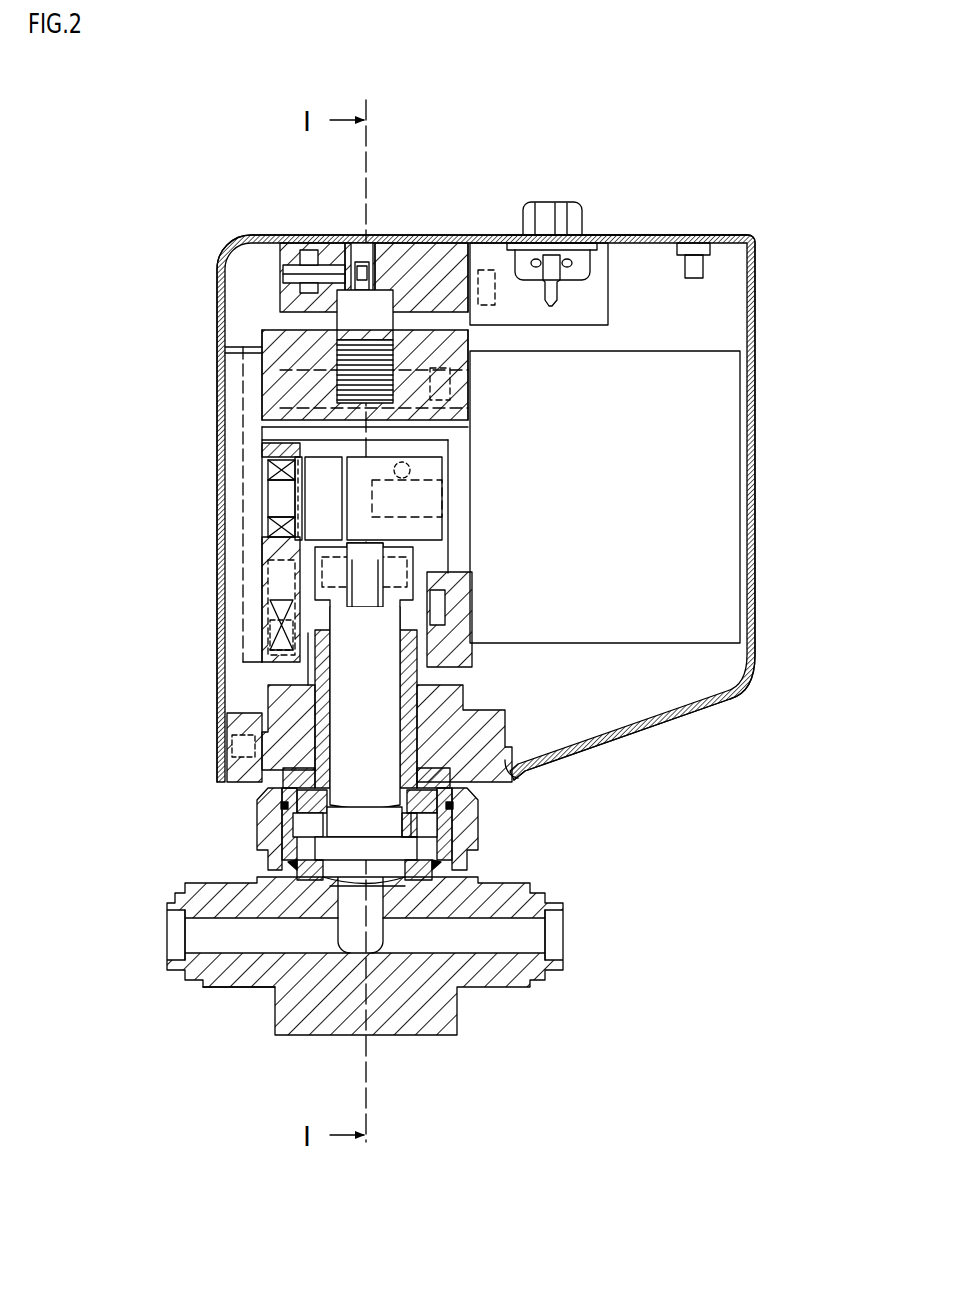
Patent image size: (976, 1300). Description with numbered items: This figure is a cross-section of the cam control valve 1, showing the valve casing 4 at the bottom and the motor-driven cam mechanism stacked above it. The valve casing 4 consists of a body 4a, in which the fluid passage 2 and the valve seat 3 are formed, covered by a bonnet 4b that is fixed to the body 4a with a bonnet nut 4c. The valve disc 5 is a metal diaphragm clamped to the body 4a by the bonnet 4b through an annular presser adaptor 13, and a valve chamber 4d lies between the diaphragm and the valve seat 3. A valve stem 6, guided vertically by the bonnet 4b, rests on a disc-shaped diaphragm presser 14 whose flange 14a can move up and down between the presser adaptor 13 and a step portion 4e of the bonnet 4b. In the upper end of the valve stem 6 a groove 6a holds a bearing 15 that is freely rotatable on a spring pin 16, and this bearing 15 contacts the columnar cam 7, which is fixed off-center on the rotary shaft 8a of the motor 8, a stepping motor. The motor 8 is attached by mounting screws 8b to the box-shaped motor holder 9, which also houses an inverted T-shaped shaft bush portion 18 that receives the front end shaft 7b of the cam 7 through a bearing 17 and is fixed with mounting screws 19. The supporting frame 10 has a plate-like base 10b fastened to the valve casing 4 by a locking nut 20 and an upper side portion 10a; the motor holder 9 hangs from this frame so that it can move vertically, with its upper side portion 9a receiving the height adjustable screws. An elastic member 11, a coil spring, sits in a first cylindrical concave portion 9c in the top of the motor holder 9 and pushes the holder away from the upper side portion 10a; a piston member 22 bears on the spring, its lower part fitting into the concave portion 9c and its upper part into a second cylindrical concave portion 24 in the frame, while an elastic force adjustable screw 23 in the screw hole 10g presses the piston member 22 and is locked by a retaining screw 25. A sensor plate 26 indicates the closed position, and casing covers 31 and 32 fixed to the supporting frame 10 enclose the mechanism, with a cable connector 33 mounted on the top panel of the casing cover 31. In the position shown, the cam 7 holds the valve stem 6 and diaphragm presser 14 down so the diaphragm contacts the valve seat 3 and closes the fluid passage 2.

The cam control valve 1 is at (750, 165).
The fluid passage 2 is at (222, 937).
The valve seat 3 is at (342, 880).
The valve casing 4 is at (536, 870).
The body 4a is at (242, 978).
The bonnet 4b is at (298, 810).
The bonnet nut 4c is at (257, 795).
The valve chamber 4d is at (385, 878).
The step portion 4e is at (305, 852).
The valve disc 5 is at (380, 885).
The valve stem 6 is at (345, 680).
The groove 6a is at (347, 600).
The cam 7 is at (443, 458).
The front end shaft 7b is at (298, 492).
The motor 8 is at (742, 352).
The rotary shaft 8a is at (450, 530).
The mounting screws 8b is at (470, 392).
The motor holder 9 is at (254, 338).
The upper side portion 9a is at (262, 350).
The first cylindrical concave portion 9c is at (462, 352).
The supporting frame 10 is at (266, 265).
The upper side portion 10a is at (440, 262).
The base 10b is at (250, 703).
The screw hole 10g is at (358, 243).
The elastic member 11 is at (327, 383).
The presser adaptor 13 is at (298, 873).
The diaphragm presser 14 is at (383, 832).
The flange 14a is at (415, 850).
The bearing 15 is at (330, 552).
The spring pin 16 is at (268, 600).
The bearing 17 is at (268, 470).
The shaft bush portion 18 is at (265, 540).
The mounting screws 19 is at (262, 650).
The locking nut 20 is at (460, 690).
The piston member 22 is at (348, 318).
The elastic force adjustable screw 23 is at (418, 300).
The second cylindrical concave portion 24 is at (430, 300).
The retaining screw 25 is at (312, 243).
The sensor plate 26 is at (318, 452).
The casing cover 31 is at (648, 235).
The casing cover 32 is at (752, 265).
The connector 33 is at (580, 205).